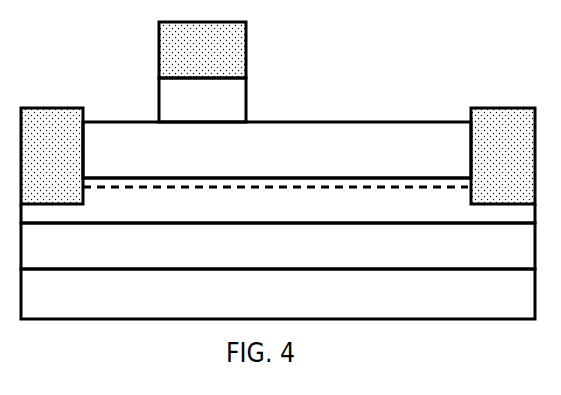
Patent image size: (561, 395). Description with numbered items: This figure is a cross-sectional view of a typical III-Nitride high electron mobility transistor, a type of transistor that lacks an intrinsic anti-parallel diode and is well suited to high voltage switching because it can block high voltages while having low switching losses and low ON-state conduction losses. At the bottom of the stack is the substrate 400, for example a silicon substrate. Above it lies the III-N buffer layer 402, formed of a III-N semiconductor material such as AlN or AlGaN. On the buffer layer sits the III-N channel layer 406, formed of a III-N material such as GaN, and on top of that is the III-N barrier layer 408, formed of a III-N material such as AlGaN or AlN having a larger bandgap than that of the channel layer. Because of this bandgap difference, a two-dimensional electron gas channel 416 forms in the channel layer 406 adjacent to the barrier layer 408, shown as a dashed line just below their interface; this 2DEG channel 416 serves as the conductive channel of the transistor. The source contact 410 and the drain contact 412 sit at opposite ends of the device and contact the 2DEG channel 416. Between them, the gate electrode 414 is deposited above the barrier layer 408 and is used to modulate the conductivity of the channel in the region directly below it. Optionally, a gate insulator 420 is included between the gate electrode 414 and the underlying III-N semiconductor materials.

The substrate 400 is at (203, 311).
The III-N buffer layer 402 is at (203, 256).
The III-N channel layer 406 is at (203, 216).
The III-N barrier layer 408 is at (203, 166).
The source contact 410 is at (73, 162).
The drain contact 412 is at (525, 162).
The gate electrode 414 is at (223, 62).
The two-dimensional electron gas (2DEG) channel 416 is at (423, 185).
The gate insulator 420 is at (223, 111).